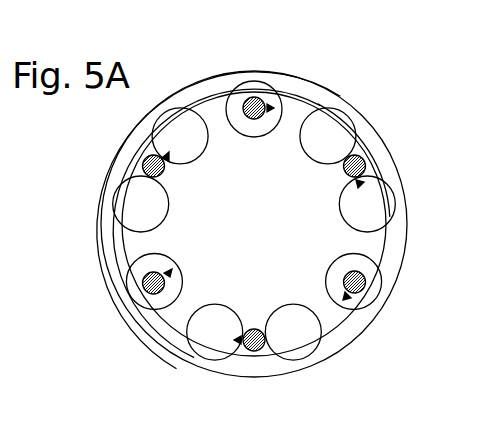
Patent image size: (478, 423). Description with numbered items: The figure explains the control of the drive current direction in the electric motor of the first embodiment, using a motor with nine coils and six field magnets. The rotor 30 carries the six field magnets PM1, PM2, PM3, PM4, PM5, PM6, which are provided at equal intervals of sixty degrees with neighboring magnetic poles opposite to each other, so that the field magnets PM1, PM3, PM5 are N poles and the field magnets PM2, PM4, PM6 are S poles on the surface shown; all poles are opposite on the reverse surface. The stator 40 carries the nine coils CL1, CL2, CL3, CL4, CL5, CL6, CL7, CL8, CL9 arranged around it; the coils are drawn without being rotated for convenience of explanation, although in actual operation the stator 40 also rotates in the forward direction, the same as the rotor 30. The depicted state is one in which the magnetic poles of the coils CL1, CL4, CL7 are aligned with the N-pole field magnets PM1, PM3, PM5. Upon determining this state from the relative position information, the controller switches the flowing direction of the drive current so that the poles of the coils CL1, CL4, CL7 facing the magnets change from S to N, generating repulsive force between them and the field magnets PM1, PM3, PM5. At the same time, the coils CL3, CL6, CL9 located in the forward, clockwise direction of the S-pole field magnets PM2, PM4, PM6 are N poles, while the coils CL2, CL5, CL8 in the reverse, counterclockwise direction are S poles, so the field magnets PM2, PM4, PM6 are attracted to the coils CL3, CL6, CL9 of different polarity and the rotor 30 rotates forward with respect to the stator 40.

The rotor 30 is at (322, 108).
The stator 40 is at (324, 103).
The coil CL1 is at (281, 92).
The coil CL2 is at (362, 122).
The coil CL3 is at (389, 216).
The coil CL4 is at (368, 312).
The coil CL5 is at (284, 357).
The coil CL6 is at (191, 350).
The coil CL7 is at (122, 302).
The coil CL8 is at (123, 180).
The coil CL9 is at (187, 108).
The field magnet PM1 is at (255, 96).
The field magnet PM2 is at (366, 160).
The field magnet PM3 is at (366, 289).
The field magnet PM4 is at (253, 352).
The field magnet PM5 is at (142, 294).
The field magnet PM6 is at (143, 157).